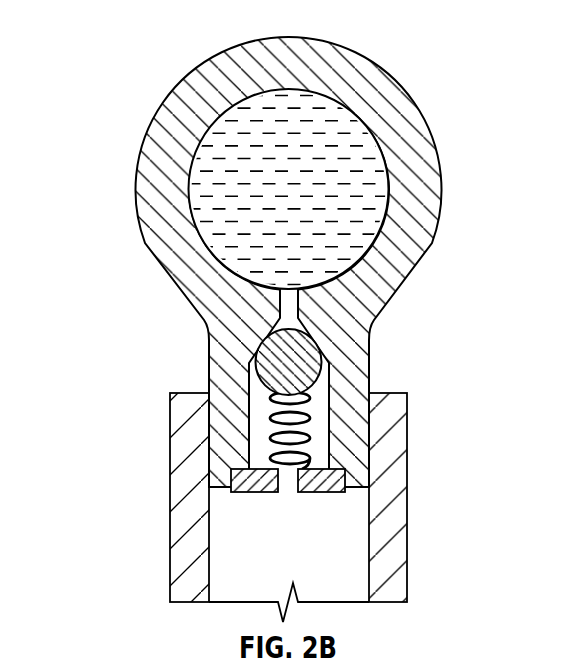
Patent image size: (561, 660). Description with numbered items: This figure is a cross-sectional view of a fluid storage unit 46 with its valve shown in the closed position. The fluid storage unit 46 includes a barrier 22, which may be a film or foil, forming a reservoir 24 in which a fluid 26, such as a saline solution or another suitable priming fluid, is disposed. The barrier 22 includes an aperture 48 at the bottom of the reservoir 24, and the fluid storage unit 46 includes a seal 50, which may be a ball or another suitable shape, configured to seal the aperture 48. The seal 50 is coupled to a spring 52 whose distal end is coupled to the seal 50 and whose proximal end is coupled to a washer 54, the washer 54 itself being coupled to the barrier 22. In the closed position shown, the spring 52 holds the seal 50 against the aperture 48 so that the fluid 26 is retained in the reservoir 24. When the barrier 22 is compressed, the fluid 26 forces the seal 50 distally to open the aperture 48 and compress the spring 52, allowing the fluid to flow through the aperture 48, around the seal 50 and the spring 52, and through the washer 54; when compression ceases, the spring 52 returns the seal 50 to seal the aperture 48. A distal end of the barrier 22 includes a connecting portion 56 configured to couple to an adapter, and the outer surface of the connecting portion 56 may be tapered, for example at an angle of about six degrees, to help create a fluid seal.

The fluid storage unit 46 is at (103, 88).
The barrier 22 is at (365, 68).
The reservoir 24 is at (367, 203).
The fluid 26 is at (258, 152).
The aperture 48 is at (288, 285).
The seal 50 is at (310, 370).
The spring 52 is at (312, 422).
The washer 54 is at (328, 483).
The connecting portion 56 is at (220, 486).